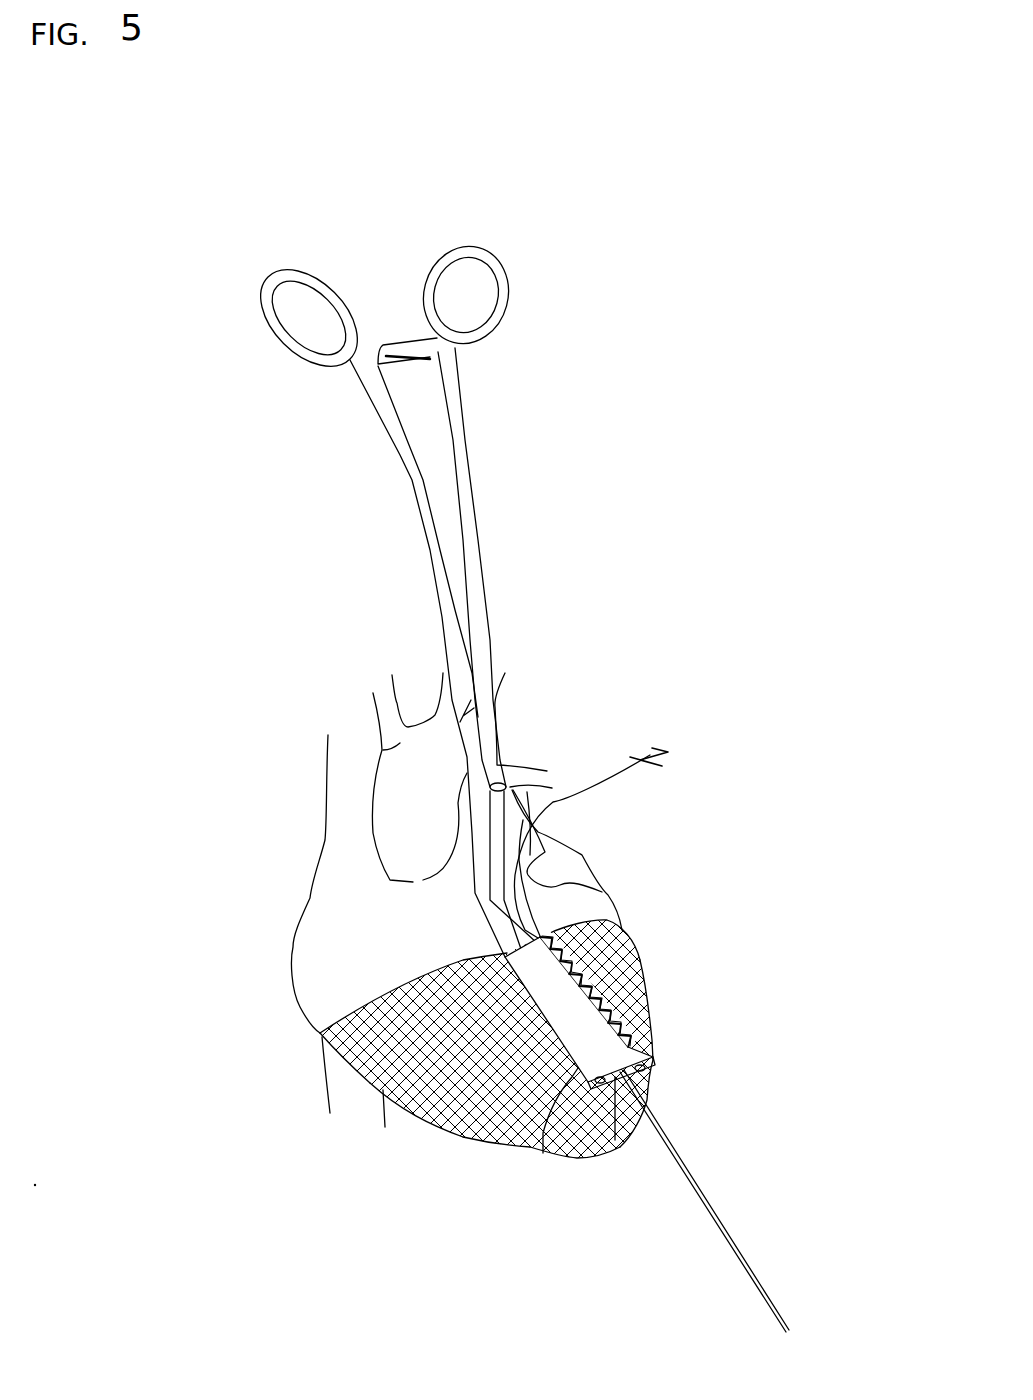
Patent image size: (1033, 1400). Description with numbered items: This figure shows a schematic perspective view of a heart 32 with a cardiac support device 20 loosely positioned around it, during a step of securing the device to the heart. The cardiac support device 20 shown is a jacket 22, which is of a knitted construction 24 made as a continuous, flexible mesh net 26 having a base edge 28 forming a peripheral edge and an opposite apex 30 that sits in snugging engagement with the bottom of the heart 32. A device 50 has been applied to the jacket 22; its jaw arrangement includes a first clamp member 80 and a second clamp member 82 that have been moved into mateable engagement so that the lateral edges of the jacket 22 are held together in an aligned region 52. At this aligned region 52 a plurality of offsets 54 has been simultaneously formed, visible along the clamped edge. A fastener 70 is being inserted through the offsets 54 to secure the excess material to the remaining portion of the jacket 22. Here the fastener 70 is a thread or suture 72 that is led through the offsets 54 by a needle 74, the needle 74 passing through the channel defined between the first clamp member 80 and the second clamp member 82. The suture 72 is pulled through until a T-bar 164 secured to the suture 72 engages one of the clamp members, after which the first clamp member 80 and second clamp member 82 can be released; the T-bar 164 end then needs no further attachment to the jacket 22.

The cardiac support device 20 is at (443, 946).
The jacket 22 is at (357, 1026).
The knitted construction 24 is at (415, 1110).
The mesh net 26 is at (453, 1123).
The base edge 28 is at (385, 997).
The apex 30 is at (622, 1135).
The heart 32 is at (293, 972).
The device 50 is at (676, 1082).
The aligned region 52 is at (592, 985).
The offsets 54 is at (579, 963).
The fastener 70 is at (672, 1118).
The suture 72 is at (597, 778).
The needle 74 is at (728, 1231).
The first clamp member 80 is at (620, 1022).
The second clamp member 82 is at (548, 1158).
The T-bar 164 is at (655, 750).